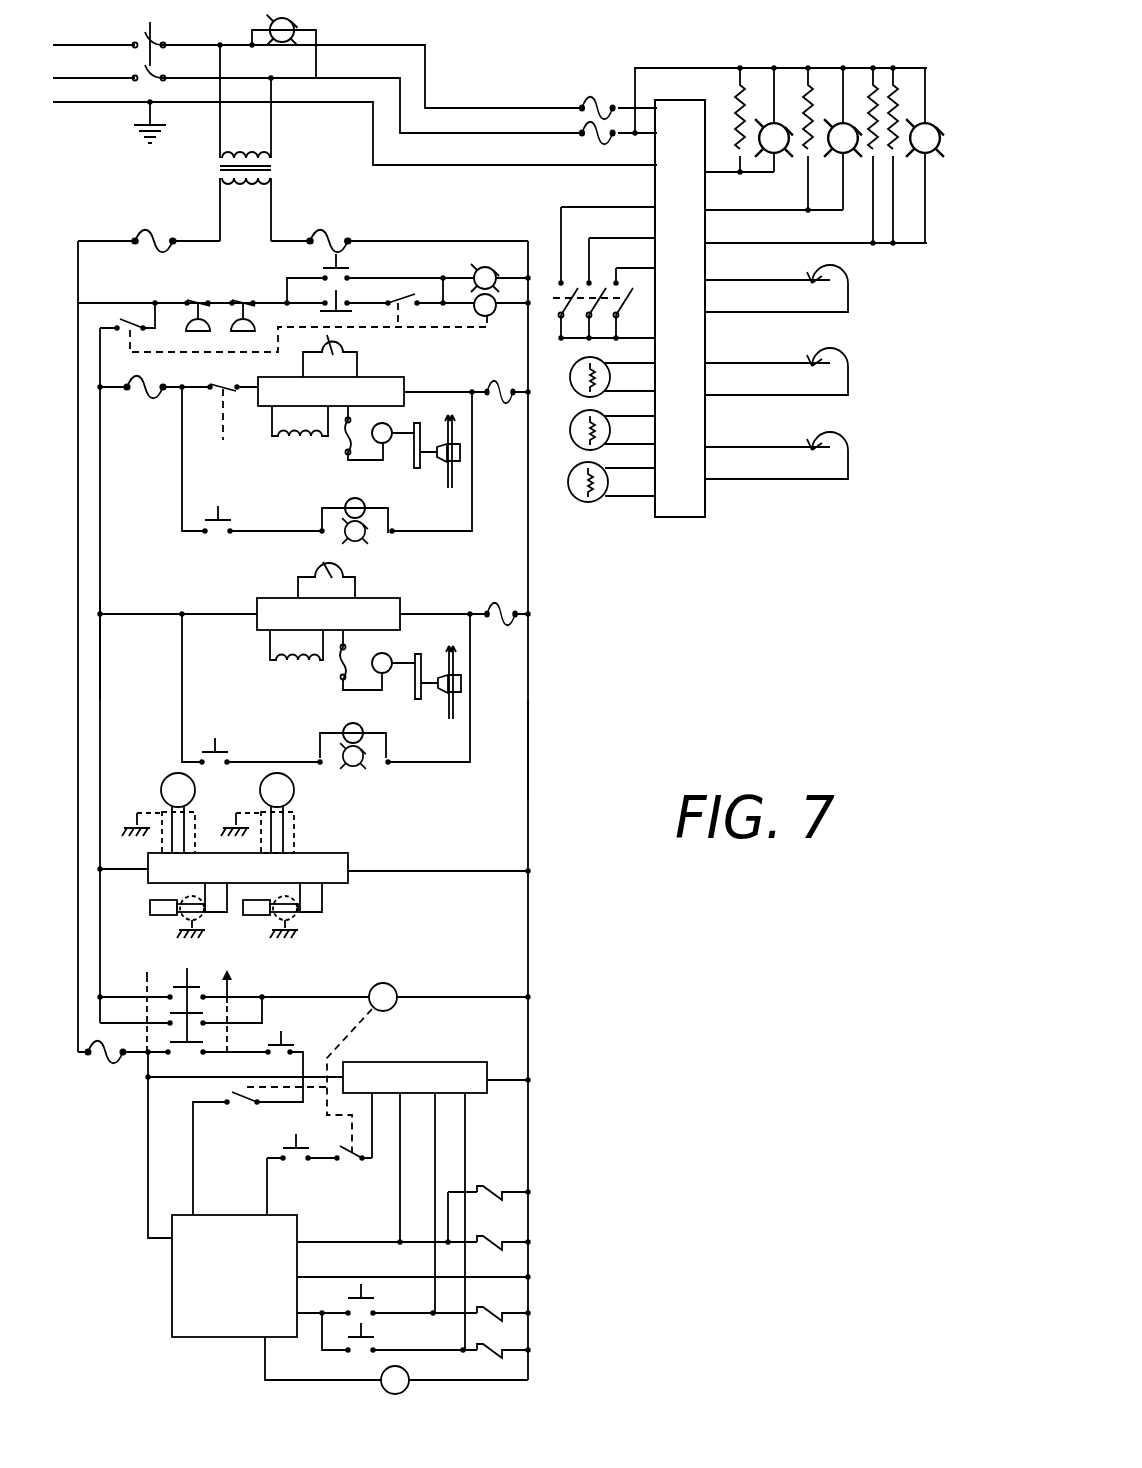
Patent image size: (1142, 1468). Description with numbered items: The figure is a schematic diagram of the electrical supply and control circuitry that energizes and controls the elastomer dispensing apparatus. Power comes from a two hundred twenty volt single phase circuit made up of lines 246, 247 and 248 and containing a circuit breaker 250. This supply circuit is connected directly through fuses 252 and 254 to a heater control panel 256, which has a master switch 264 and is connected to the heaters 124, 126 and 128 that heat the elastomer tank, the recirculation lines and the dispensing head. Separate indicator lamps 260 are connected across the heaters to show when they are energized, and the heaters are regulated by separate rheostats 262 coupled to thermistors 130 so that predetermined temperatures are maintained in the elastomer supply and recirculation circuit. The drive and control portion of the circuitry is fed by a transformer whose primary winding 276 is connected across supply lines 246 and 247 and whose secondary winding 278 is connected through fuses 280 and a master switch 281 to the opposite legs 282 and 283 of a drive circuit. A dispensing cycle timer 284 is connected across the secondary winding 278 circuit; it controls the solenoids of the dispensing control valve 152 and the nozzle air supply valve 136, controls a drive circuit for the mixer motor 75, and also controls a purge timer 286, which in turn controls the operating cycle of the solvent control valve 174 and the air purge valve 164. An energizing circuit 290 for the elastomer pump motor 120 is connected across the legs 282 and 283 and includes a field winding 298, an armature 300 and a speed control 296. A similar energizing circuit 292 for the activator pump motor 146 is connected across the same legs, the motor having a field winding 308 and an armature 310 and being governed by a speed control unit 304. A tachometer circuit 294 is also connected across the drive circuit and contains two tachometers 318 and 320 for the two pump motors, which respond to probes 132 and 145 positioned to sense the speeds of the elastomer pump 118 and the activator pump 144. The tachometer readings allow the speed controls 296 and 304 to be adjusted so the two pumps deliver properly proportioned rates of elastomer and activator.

The supply line 246 is at (72, 22).
The supply line 247 is at (72, 57).
The supply line 248 is at (62, 104).
The circuit breaker 250 is at (163, 42).
The fuse 252 is at (590, 106).
The fuse 254 is at (580, 133).
The heater control panel 256 is at (710, 503).
The indicator lamps 260 is at (774, 176).
The rheostats 262 is at (850, 298).
The master switch 264 is at (557, 298).
The primary winding 276 is at (253, 152).
The secondary winding 278 is at (266, 188).
The fuses 280 is at (140, 238).
The master switch 281 is at (193, 970).
The leg of drive circuit 282 is at (100, 690).
The leg of drive circuit 283 is at (528, 753).
The dispensing cycle timer 284 is at (258, 1283).
The purge timer 286 is at (440, 1092).
The energizing circuit 290 is at (420, 372).
The energizing circuit 292 is at (430, 598).
The tachometer circuit 294 is at (362, 846).
The speed control 296 is at (345, 343).
The field winding 298 is at (305, 440).
The armature 300 is at (393, 440).
The speed control unit 304 is at (345, 568).
The field winding 308 is at (303, 665).
The armature 310 is at (392, 670).
The tachometer 318 is at (225, 806).
The tachometer 320 is at (290, 785).
The elastomer pump 118 is at (460, 455).
The elastomer pump motor 120 is at (331, 390).
The heater 124 is at (735, 108).
The heater 126 is at (893, 100).
The heater 128 is at (806, 100).
The thermistors 130 is at (609, 378).
The probe 132 is at (165, 917).
The activator pump 144 is at (461, 686).
The probe 145 is at (255, 917).
The activator pump motor 146 is at (348, 627).
The nozzle air supply valve 136 is at (480, 1188).
The dispensing control valve 152 is at (480, 1238).
The solvent control valve 174 is at (480, 1309).
The air purge valve 164 is at (480, 1346).
The mixer motor 75 is at (398, 1393).